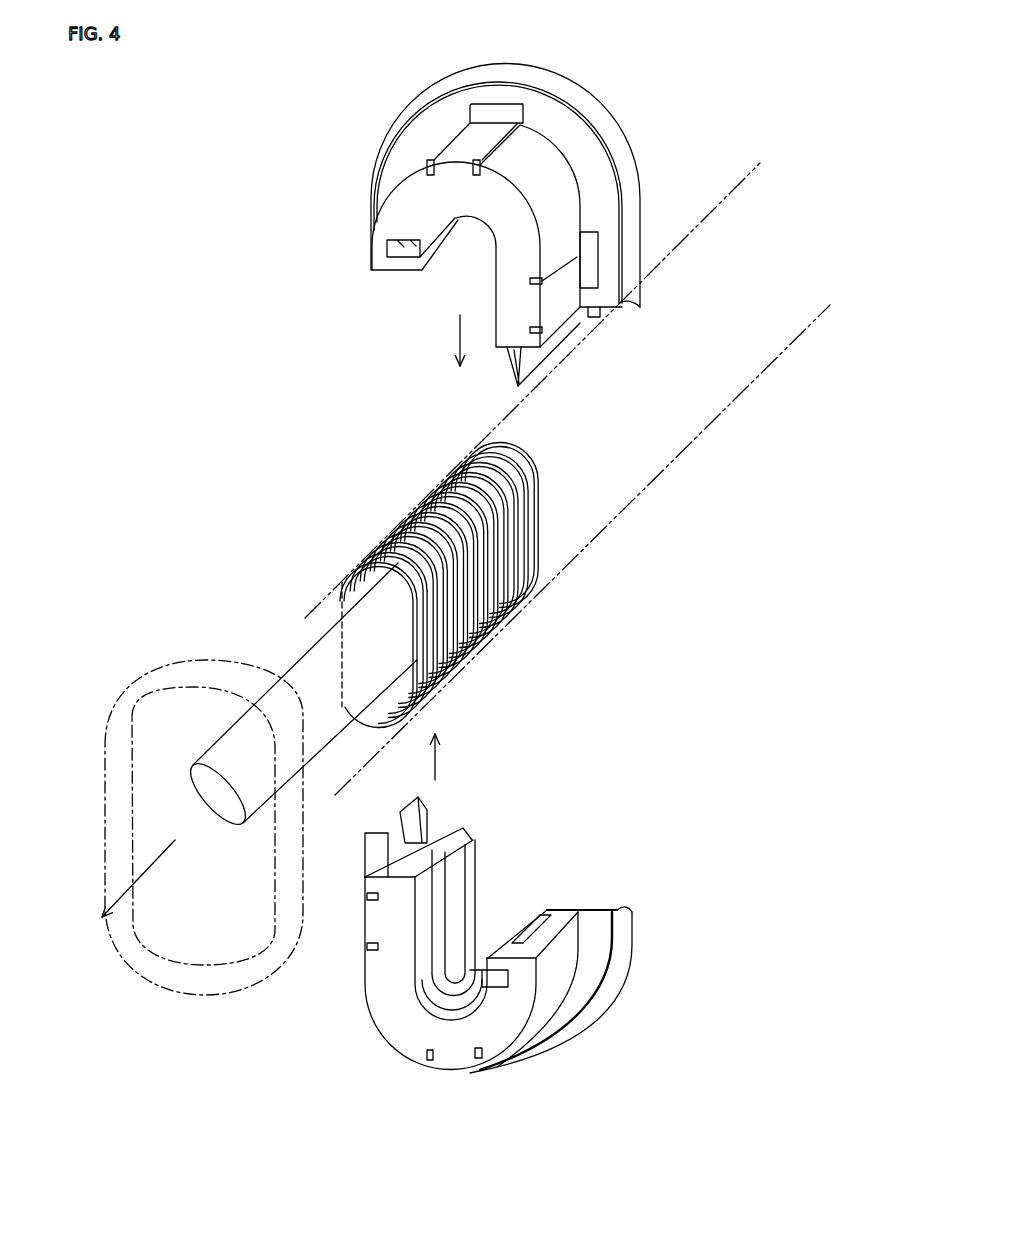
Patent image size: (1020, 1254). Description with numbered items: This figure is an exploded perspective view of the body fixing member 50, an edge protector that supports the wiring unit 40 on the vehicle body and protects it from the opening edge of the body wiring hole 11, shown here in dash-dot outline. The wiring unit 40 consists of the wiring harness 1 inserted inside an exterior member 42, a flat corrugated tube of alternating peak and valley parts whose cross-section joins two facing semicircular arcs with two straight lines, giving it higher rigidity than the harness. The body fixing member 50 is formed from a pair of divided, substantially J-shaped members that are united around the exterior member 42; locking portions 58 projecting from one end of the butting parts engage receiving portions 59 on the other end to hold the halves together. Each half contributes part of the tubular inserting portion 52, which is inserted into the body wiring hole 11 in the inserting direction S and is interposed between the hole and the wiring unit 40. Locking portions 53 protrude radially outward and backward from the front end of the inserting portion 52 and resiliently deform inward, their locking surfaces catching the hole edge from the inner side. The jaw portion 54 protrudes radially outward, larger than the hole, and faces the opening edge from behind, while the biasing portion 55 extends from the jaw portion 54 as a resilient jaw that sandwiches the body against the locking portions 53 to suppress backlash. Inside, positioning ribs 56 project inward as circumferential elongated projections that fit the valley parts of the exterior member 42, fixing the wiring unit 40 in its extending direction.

The wiring harness 1 is at (287, 672).
The body wiring hole 11 is at (196, 703).
The wiring unit 40 is at (504, 645).
The exterior member 42 is at (477, 657).
The body fixing member 50 is at (352, 149).
The inserting portion 52 is at (557, 160).
The locking portion 53 is at (457, 143).
The jaw portion 54 is at (567, 120).
The biasing portion 55 is at (605, 112).
The positioning ribs 56 is at (475, 908).
The locking portions 58 is at (548, 370).
The receiving portions 59 is at (393, 236).
The inserting direction S is at (124, 889).